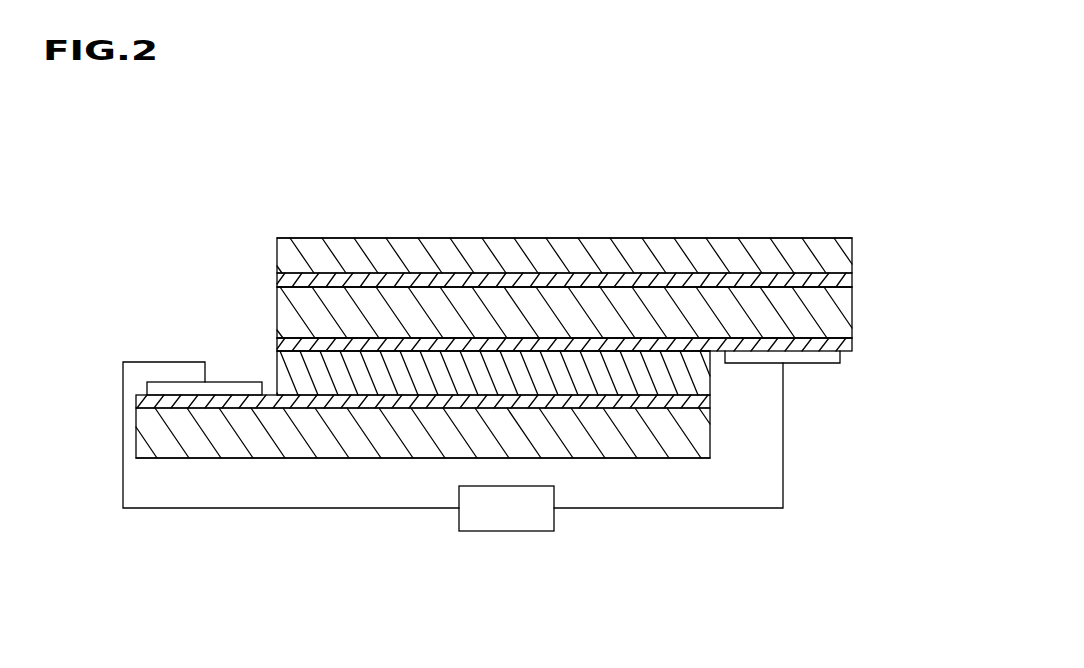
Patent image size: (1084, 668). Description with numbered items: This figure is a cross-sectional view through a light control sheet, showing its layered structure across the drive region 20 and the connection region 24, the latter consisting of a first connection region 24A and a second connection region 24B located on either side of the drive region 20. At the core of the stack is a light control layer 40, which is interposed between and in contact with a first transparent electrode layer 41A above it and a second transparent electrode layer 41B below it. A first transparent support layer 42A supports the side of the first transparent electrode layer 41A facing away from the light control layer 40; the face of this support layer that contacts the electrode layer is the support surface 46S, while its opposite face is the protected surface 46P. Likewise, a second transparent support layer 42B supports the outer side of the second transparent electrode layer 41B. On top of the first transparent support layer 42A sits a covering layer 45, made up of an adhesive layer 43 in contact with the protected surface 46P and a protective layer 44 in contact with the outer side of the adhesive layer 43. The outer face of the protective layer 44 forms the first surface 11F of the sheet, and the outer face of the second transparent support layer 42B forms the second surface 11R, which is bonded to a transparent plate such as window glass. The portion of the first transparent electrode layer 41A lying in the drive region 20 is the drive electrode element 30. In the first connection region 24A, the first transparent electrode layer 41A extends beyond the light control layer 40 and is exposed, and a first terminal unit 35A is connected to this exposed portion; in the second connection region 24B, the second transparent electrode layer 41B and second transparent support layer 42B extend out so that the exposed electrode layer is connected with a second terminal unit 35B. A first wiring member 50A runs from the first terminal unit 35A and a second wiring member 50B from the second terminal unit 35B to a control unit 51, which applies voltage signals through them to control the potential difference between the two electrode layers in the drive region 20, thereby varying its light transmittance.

The drive region 20 is at (710, 174).
The connection region 24 is at (499, 153).
The first connection region 24A is at (848, 174).
The second connection region 24B is at (275, 174).
The drive electrode element 30 is at (396, 338).
The first surface 11F is at (538, 238).
The second surface 11R is at (312, 458).
The protected surface 46P is at (750, 285).
The support surface 46S is at (690, 345).
The protective layer 44 is at (853, 241).
The adhesive layer 43 is at (853, 279).
The covering layer 45 is at (619, 264).
The first transparent support layer 42A is at (853, 306).
The first transparent electrode layer 41A is at (853, 340).
The light control layer 40 is at (710, 374).
The second transparent electrode layer 41B is at (136, 401).
The second transparent support layer 42B is at (136, 434).
The first terminal unit 35A is at (840, 364).
The second terminal unit 35B is at (224, 382).
The first wiring member 50A is at (668, 508).
The second wiring member 50B is at (231, 508).
The control unit 51 is at (554, 518).